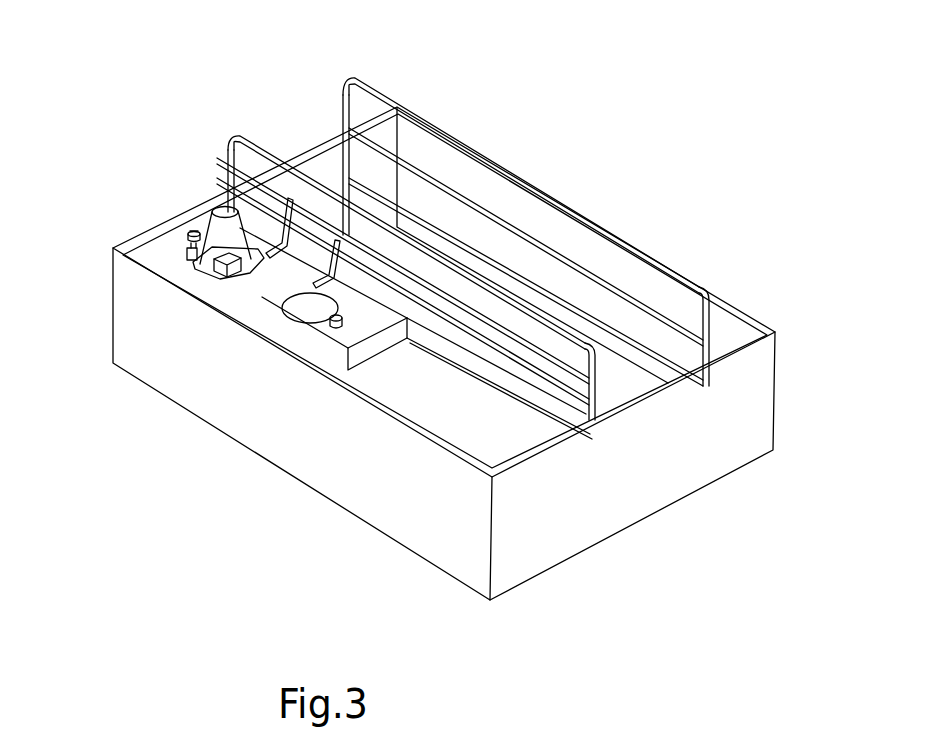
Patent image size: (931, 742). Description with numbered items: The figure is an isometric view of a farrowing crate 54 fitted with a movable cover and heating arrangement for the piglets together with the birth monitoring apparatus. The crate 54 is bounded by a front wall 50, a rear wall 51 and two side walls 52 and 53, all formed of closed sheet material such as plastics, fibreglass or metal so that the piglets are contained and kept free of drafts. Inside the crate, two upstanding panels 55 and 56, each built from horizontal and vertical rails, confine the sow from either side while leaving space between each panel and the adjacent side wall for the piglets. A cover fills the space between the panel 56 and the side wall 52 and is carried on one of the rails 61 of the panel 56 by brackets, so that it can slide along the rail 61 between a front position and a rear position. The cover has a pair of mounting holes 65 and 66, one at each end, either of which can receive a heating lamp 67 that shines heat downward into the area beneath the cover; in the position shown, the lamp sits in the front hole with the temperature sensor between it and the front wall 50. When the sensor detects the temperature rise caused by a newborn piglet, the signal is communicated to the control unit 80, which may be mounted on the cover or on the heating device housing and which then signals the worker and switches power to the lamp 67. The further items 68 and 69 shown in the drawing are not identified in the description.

The front wall 50 is at (147, 226).
The rear wall 51 is at (560, 540).
The side wall 52 is at (402, 518).
The side wall 53 is at (730, 318).
The crate 54 is at (526, 216).
The upstanding panel 55 is at (467, 142).
The upstanding panel 56 is at (243, 142).
The rail 61 is at (408, 245).
The mounting hole 65 is at (330, 337).
The mounting hole 66 is at (284, 310).
The heating lamp 67 is at (406, 231).
The nozzle 68 is at (192, 246).
The knob 69 is at (340, 326).
The control unit 80 is at (190, 231).